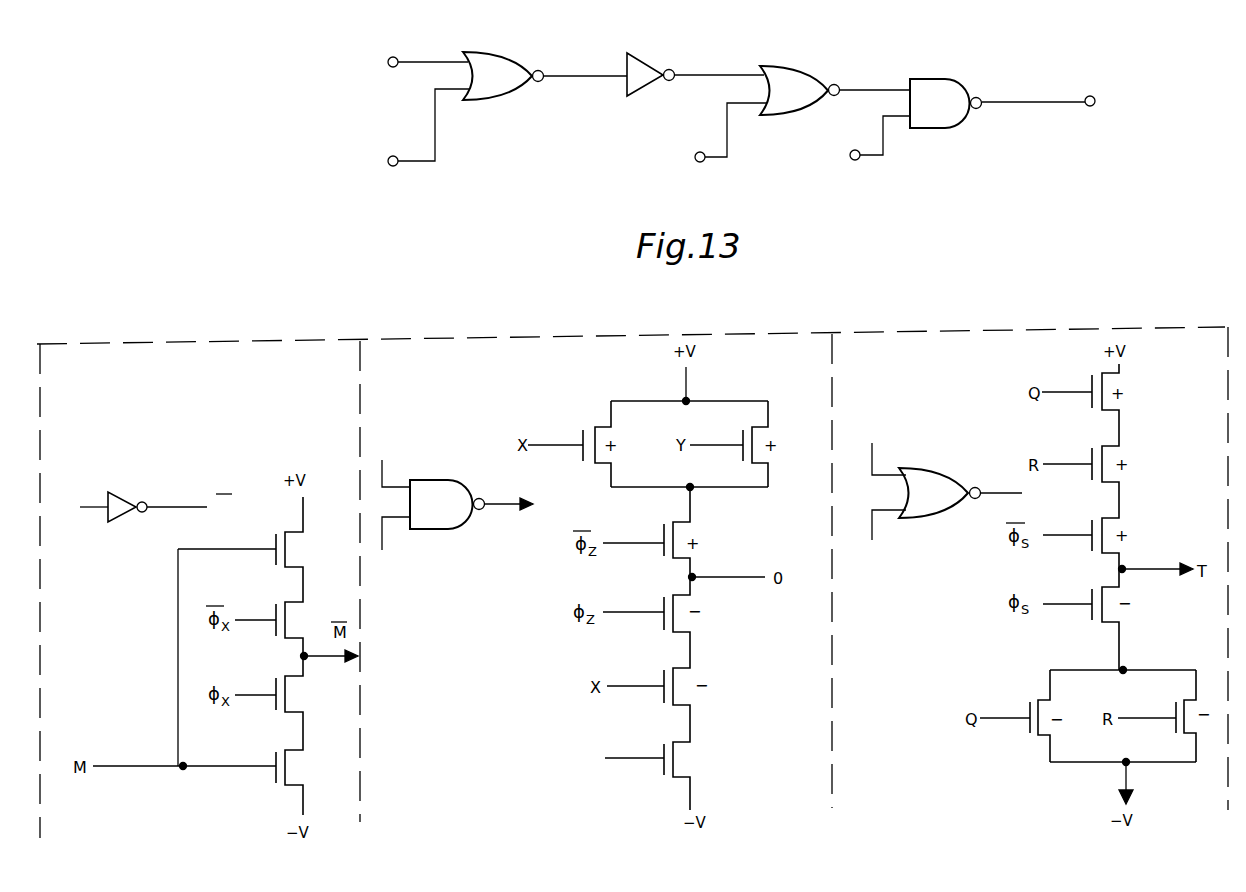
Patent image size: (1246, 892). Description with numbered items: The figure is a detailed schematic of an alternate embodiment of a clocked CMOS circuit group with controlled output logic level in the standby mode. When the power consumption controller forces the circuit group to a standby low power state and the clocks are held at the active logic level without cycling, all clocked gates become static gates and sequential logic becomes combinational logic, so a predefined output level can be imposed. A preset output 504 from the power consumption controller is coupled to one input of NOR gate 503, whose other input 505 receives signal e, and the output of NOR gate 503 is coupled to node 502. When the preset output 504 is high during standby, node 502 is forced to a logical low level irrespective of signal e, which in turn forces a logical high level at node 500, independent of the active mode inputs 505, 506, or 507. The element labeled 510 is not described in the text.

The node 500 is at (1020, 99).
The node 502 is at (584, 73).
The NOR gate 503 is at (492, 90).
The preset output 504 is at (418, 163).
The input 505 is at (426, 62).
The active mode input 506 is at (712, 160).
The active mode input 507 is at (870, 157).
The inverter 510 is at (646, 86).